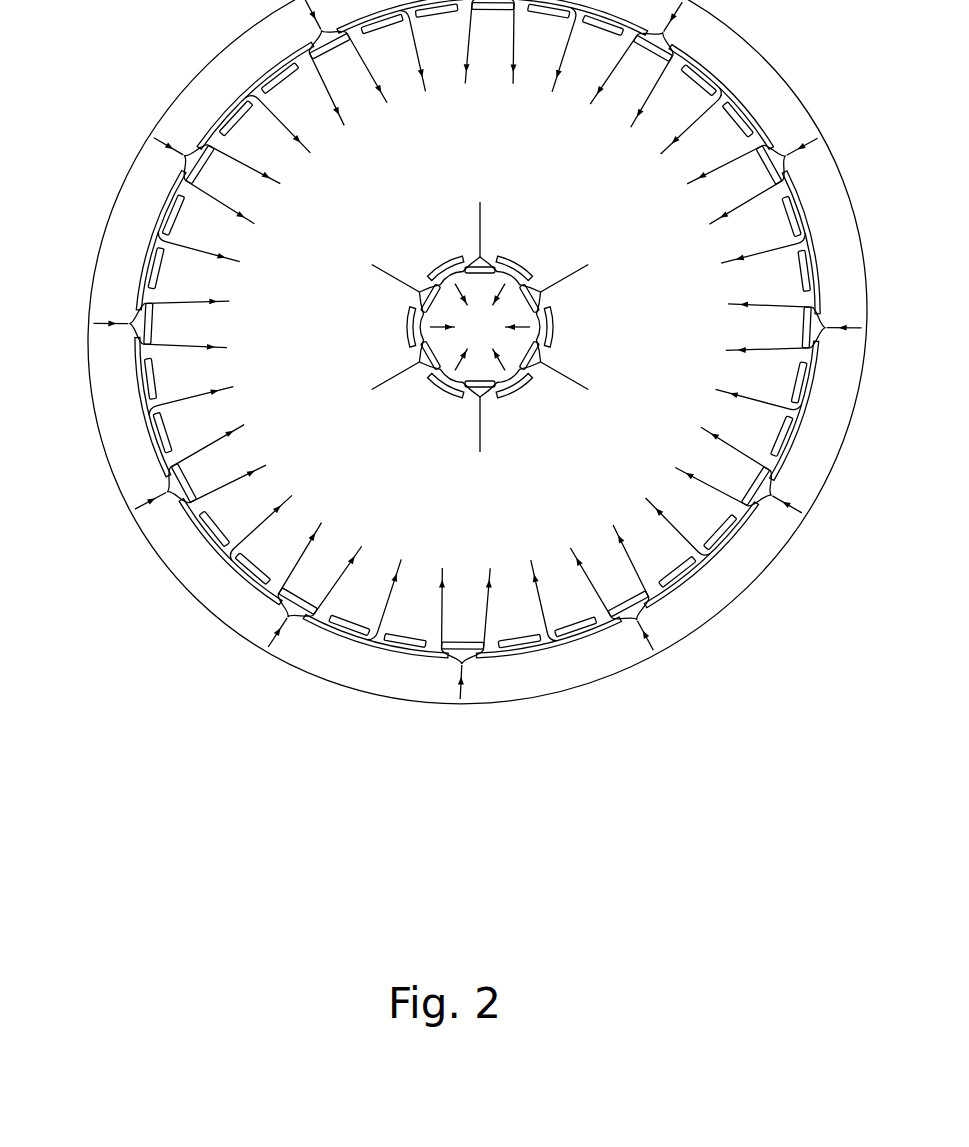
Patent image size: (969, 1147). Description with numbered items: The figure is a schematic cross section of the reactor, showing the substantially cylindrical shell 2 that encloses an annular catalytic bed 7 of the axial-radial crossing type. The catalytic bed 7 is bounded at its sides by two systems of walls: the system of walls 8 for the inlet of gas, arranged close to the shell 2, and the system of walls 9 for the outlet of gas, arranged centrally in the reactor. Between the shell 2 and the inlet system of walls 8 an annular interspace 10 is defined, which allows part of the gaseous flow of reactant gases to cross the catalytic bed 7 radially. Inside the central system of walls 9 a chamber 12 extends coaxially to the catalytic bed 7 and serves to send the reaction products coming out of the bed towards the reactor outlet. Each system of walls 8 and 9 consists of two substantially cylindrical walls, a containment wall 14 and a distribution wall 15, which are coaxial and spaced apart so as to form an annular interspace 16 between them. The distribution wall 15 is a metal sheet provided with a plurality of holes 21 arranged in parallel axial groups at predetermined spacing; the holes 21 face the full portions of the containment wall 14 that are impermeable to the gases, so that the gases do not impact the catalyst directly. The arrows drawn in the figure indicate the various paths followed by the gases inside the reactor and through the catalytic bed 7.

The cylindrical shell 2 is at (790, 84).
The annular catalytic bed 7 is at (432, 381).
The system of walls for the inlet of gas 8 is at (225, 568).
The system of walls for the outlet of gas 9 is at (520, 252).
The annular interspace 10 is at (127, 232).
The chamber 12 is at (479, 327).
The containment wall 14 is at (463, 644).
The distribution wall 15 is at (375, 654).
The annular interspace 16 is at (150, 410).
The holes 21 is at (466, 670).